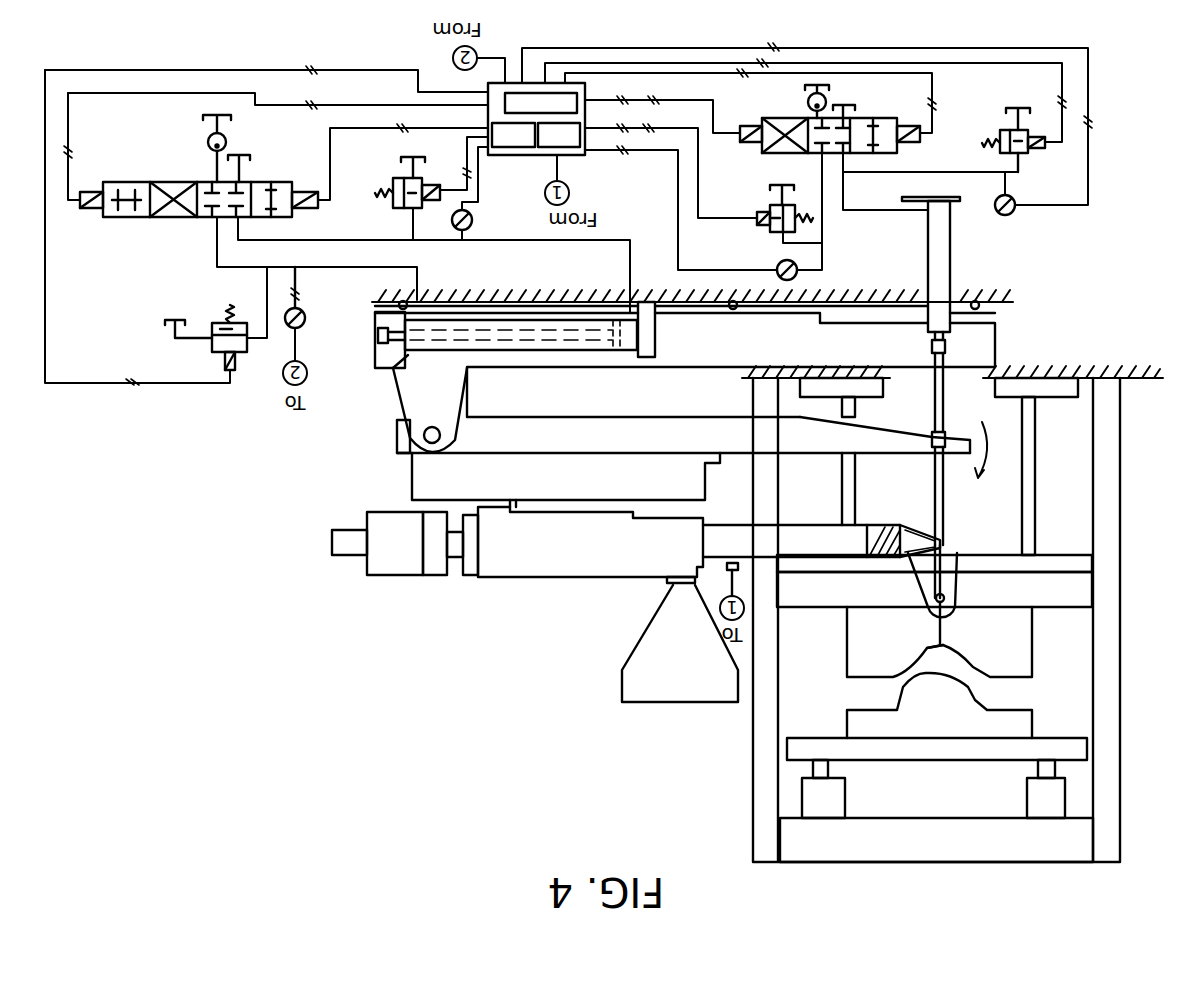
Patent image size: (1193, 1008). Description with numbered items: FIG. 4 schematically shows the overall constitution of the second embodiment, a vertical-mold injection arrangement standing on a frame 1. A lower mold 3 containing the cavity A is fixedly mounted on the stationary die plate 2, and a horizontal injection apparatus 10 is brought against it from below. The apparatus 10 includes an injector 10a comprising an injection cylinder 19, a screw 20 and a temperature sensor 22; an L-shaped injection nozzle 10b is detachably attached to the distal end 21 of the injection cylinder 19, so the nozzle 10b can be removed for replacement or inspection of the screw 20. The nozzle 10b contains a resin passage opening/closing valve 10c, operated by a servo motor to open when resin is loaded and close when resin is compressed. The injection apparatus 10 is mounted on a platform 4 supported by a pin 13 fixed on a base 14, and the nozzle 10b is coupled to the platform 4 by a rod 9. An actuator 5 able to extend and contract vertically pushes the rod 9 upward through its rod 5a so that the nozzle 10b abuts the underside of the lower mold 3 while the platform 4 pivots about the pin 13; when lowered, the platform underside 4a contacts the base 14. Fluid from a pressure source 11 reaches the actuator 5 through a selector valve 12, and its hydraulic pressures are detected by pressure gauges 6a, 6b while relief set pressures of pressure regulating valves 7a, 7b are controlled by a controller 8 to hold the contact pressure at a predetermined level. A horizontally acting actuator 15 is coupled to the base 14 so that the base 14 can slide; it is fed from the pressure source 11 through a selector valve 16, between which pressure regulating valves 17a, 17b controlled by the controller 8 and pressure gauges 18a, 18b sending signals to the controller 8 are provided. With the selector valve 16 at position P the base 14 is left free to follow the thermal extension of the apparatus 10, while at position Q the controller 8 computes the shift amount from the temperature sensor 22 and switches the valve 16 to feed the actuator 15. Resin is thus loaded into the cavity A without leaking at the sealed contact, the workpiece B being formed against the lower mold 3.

The machine frame 1 is at (1120, 730).
The stationary die plate 2 is at (1080, 598).
The lower mold 3 is at (1032, 660).
The platform 4 is at (713, 423).
The underside of the platform 4a is at (900, 432).
The actuator 5 is at (927, 265).
The rod of the actuator 5a is at (945, 435).
The pressure gauge 6a is at (1010, 215).
The pressure gauge 6b is at (778, 265).
The pressure regulating valve 7a is at (1000, 135).
The pressure regulating valve 7b is at (770, 222).
The controller 8 is at (585, 155).
The rod 9 is at (945, 500).
The horizontal injection apparatus 10 is at (555, 580).
The injector 10a is at (815, 525).
The injection nozzle 10b is at (950, 560).
The resin passage opening/closing valve 10c is at (948, 600).
The pressure source 11 is at (208, 146).
The selector valve 12 is at (775, 155).
The pin 13 is at (425, 442).
The base 14 is at (685, 358).
The actuator 15 is at (393, 368).
The selector valve 16 is at (157, 222).
The pressure regulating valve 17a is at (393, 198).
The pressure regulating valve 17b is at (212, 348).
The pressure gauge 18a is at (472, 220).
The pressure gauge 18b is at (305, 315).
The injection cylinder 19 is at (878, 557).
The screw 20 is at (885, 525).
The distal end of the injection cylinder 21 is at (910, 525).
The temperature sensor 22 is at (745, 575).
The cavity A is at (908, 675).
The workpiece blank B is at (930, 612).
The position P is at (118, 222).
The position Q is at (205, 222).